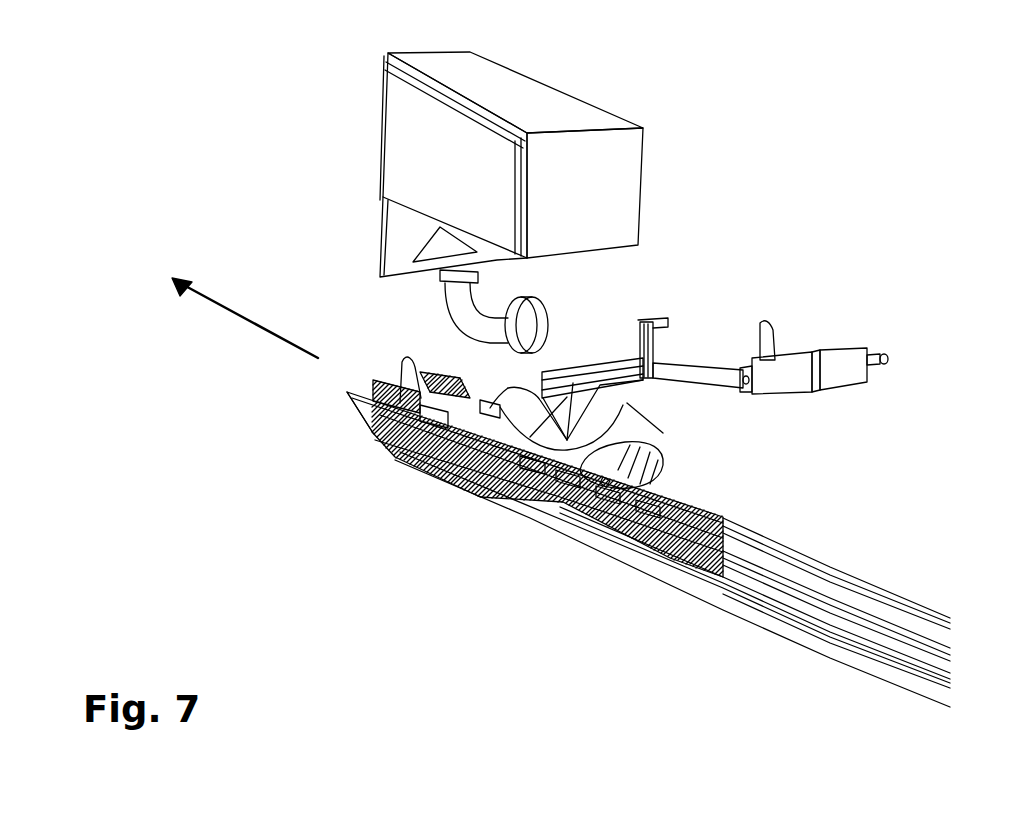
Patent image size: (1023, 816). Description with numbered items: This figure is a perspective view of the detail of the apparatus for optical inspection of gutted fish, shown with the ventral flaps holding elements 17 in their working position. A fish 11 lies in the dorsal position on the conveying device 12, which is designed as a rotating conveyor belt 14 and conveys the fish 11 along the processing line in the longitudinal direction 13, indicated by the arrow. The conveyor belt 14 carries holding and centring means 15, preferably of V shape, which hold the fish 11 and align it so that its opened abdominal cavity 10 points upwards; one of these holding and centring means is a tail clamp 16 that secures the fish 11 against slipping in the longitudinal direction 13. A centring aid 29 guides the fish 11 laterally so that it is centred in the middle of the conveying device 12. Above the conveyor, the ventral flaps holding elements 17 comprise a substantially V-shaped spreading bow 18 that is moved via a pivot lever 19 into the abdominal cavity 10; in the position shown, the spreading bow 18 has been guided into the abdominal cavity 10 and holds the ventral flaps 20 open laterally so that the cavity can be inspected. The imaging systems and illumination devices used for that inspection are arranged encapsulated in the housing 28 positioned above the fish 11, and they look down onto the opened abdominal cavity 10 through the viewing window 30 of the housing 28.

The abdominal cavity 10 is at (590, 427).
The fish 11 is at (410, 353).
The conveying device 12 is at (830, 528).
The longitudinal direction 13 is at (228, 310).
The conveyor belt 14 is at (600, 527).
The holding and centring means 15 is at (556, 500).
The tail clamp 16 is at (397, 458).
The ventral flaps holding elements 17 is at (686, 301).
The spreading bow 18 is at (468, 478).
The pivot lever 19 is at (759, 308).
The ventral flaps 20 is at (568, 430).
The housing 28 is at (648, 150).
The centring aid 29 is at (648, 445).
The viewing window 30 is at (430, 247).